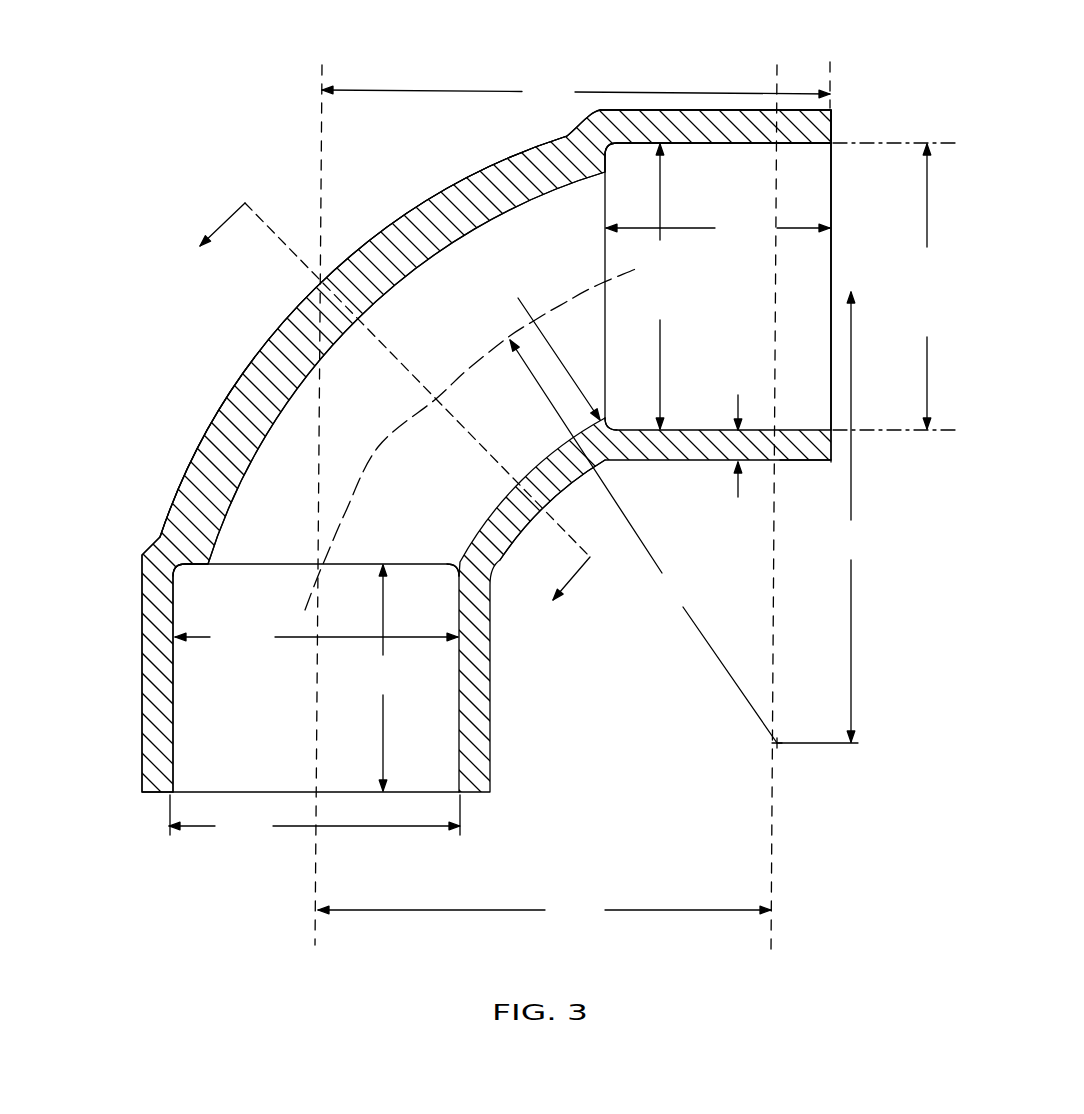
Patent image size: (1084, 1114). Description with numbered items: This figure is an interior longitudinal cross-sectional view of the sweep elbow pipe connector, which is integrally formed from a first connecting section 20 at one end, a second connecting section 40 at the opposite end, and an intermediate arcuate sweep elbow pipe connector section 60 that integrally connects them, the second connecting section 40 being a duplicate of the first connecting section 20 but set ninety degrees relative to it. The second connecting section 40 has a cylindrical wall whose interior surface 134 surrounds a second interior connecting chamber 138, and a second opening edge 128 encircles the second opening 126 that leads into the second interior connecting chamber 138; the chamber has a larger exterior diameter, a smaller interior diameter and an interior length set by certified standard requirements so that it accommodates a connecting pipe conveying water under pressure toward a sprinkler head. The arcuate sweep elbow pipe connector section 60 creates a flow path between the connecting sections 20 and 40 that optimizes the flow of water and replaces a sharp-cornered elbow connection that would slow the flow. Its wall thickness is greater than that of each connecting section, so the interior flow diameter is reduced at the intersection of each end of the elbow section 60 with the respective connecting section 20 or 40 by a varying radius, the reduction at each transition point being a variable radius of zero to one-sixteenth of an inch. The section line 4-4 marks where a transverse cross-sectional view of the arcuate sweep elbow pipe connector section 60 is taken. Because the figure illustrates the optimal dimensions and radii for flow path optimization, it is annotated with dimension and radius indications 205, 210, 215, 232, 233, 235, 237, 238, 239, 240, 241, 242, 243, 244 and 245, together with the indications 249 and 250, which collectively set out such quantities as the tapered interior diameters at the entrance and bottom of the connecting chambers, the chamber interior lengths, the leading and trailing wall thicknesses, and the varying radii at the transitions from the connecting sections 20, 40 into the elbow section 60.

The first connecting section 20 is at (106, 688).
The second connecting section 40 is at (683, 70).
The arcuate sweep elbow pipe connector section 60 is at (389, 190).
The section line 4 is at (385, 413).
The second opening 126 is at (830, 330).
The second opening edge 128 is at (816, 440).
The interior surface 134 is at (806, 150).
The second interior connecting chamber 138 is at (811, 257).
The socket depth 205 is at (379, 678).
The socket inner diameter 210 is at (314, 819).
The socket floor width 215 is at (316, 641).
The second socket depth 232 is at (718, 237).
The second socket diameter 233 is at (932, 286).
The bore diameter and centerline 235 is at (494, 377).
The socket wall thickness 237 is at (707, 449).
The inner wall of elbow 238 is at (458, 538).
The outer wall of elbow 239 is at (262, 464).
The bend radius 240 is at (643, 541).
The bend center point 241 is at (778, 747).
The offset distance 242 is at (548, 345).
The horizontal center distance 243 is at (544, 915).
The overall horizontal length 244 is at (576, 97).
The overall vertical length 245 is at (855, 90).
The shoulder fillet 249 is at (180, 572).
The shoulder fillet 250 is at (453, 570).